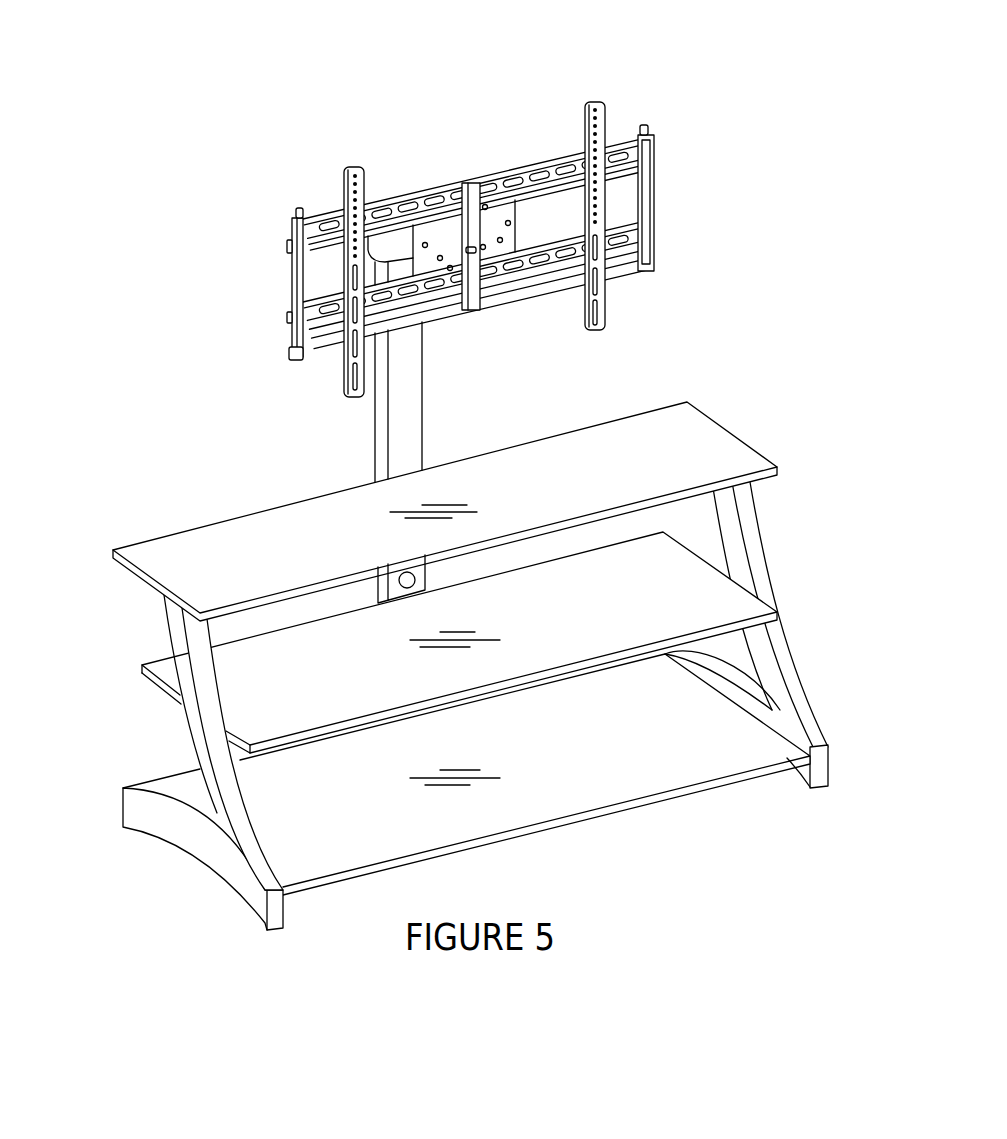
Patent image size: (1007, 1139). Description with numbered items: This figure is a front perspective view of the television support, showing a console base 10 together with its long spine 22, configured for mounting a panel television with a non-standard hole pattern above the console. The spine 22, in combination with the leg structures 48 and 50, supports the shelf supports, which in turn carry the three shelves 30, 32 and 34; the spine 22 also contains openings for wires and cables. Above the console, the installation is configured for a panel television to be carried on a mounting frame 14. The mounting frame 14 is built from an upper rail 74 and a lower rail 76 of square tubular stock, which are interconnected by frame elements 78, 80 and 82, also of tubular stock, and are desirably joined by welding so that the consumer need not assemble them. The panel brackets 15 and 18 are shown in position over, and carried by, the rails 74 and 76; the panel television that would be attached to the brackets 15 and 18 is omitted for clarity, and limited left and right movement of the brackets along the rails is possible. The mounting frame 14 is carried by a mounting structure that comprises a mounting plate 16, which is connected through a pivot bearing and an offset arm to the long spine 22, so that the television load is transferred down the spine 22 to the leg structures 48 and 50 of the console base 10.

The console base 10 is at (120, 800).
The mounting frame 14 is at (655, 134).
The panel bracket 15 is at (357, 168).
The mounting plate 16 is at (498, 214).
The panel bracket 18 is at (597, 98).
The long spine 22 is at (402, 422).
The shelf 30 is at (445, 511).
The shelf 32 is at (459, 642).
The shelf 34 is at (466, 774).
The leg structure 48 is at (760, 563).
The leg structure 50 is at (203, 853).
The rail 74 is at (441, 184).
The rail 76 is at (463, 314).
The frame element 78 is at (298, 277).
The frame element 80 is at (476, 251).
The frame element 82 is at (656, 210).